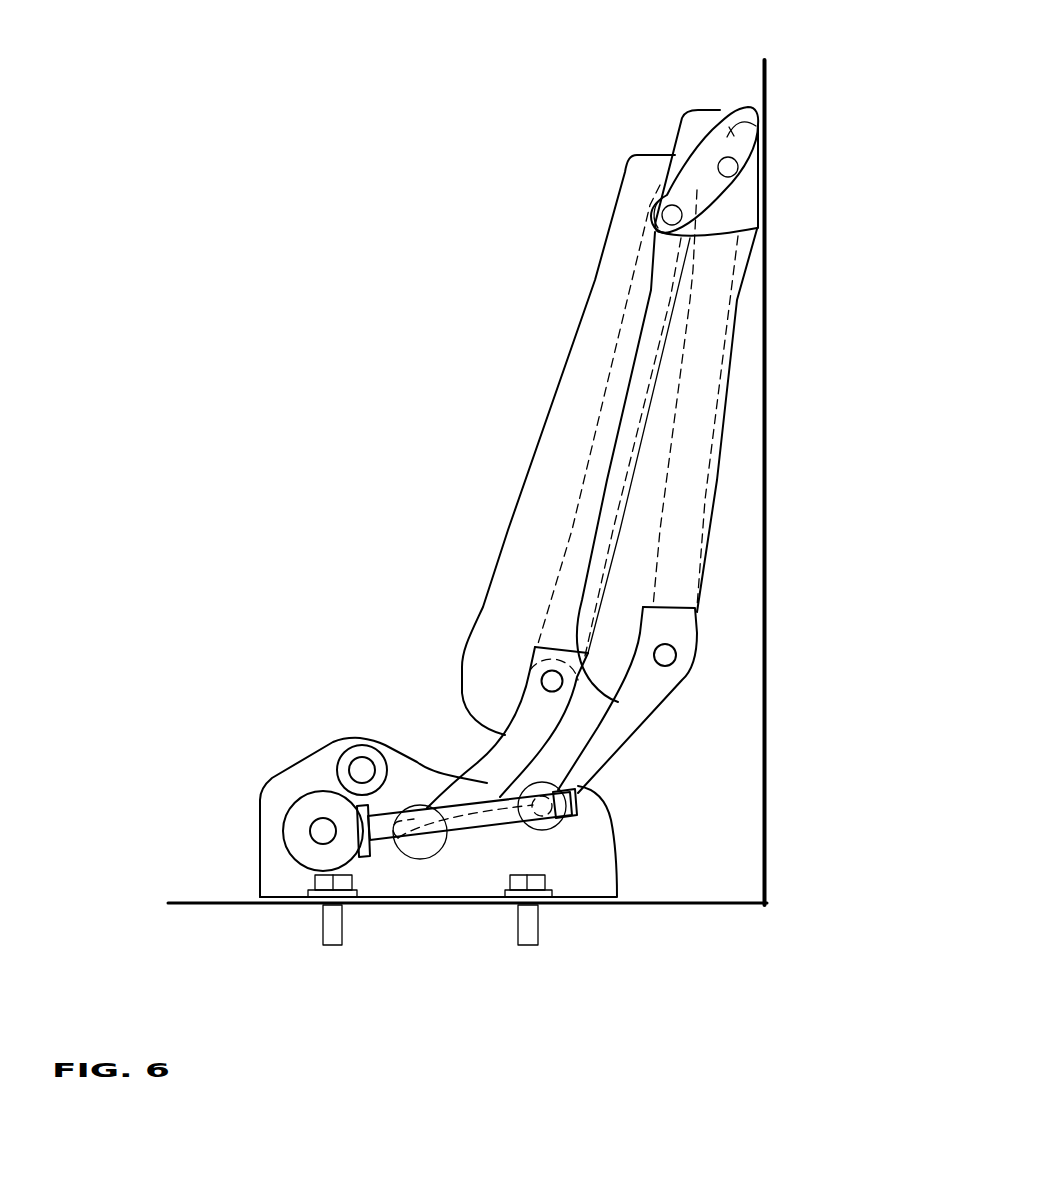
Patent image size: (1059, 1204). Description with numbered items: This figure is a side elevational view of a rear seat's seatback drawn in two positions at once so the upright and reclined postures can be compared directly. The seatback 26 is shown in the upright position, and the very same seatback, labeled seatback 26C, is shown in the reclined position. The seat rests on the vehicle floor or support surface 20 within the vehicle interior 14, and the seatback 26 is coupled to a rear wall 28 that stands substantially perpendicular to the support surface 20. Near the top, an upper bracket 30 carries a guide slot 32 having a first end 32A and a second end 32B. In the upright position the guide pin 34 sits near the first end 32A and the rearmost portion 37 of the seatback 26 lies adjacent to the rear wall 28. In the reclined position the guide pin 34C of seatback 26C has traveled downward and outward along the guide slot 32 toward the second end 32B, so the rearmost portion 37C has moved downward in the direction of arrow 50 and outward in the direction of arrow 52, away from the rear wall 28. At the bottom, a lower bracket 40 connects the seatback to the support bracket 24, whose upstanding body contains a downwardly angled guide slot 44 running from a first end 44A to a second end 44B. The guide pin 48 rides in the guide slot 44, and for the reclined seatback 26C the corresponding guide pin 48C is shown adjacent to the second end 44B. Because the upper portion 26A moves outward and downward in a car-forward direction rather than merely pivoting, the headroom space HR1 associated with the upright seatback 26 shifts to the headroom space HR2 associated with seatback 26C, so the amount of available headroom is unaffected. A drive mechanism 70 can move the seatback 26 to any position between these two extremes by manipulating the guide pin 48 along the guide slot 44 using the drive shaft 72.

The vehicle interior 14 is at (366, 304).
The support surface 20 is at (697, 902).
The support bracket 24 is at (236, 829).
The seatback 26 is at (720, 491).
The upper portion of seatback 26A is at (692, 134).
The seatback in reclined position 26C is at (596, 481).
The rear wall 28 is at (765, 823).
The upper bracket 30 is at (749, 234).
The guide slot 32 is at (716, 189).
The first end of guide slot 32A is at (752, 122).
The second end of guide slot 32B is at (670, 192).
The guide pin 34 is at (738, 170).
The guide pin of reclined seatback 34C is at (660, 223).
The rearmost portion of seatback 37 is at (733, 330).
The rearmost portion of reclined seatback 37C is at (617, 547).
The lower bracket 40 is at (670, 723).
The guide slot 44 is at (472, 834).
The first end of guide slot 44A is at (567, 819).
The second end of guide slot 44B is at (398, 846).
The guide pin 48 is at (556, 828).
The guide pin of reclined seatback 48C is at (432, 858).
The arrow indicating downward direction 50 is at (837, 546).
The arrow indicating outward direction 52 is at (666, 773).
The drive mechanism 70 is at (290, 866).
The drive shaft 72 is at (383, 838).
The headroom space HR1 is at (708, 110).
The headroom space HR2 is at (649, 150).